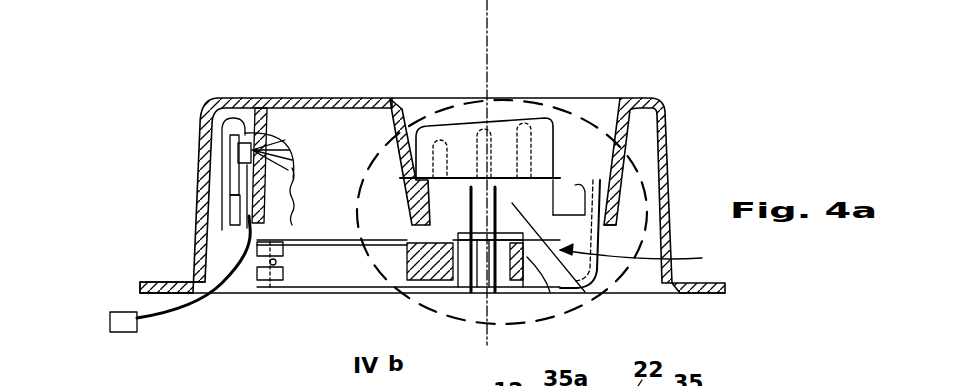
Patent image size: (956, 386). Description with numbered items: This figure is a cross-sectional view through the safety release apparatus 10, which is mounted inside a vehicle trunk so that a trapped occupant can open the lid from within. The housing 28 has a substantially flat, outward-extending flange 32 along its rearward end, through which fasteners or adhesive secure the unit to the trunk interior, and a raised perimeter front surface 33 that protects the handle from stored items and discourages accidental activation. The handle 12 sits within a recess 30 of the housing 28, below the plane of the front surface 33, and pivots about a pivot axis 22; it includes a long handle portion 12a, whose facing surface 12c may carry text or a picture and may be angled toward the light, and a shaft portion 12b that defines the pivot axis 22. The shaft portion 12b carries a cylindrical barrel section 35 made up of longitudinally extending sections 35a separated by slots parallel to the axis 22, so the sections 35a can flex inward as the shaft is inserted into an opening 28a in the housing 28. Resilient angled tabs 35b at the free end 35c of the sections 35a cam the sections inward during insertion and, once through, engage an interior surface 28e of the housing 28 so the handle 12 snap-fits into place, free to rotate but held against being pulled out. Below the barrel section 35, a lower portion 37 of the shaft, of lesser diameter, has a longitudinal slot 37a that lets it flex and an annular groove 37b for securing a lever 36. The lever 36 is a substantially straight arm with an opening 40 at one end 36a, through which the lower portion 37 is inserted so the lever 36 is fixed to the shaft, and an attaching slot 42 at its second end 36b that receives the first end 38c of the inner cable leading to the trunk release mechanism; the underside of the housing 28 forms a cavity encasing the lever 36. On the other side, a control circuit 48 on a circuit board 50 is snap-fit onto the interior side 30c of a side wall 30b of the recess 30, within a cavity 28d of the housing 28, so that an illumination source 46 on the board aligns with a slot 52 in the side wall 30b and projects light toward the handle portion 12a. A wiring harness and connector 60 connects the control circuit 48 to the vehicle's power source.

The safety release apparatus 10 is at (141, 66).
The handle 12 is at (460, 157).
The handle portion 12a is at (503, 133).
The shaft portion 12b is at (655, 252).
The facing surface 12c is at (480, 150).
The pivot axis 22 is at (487, 33).
The housing 28 is at (668, 125).
The opening 28a is at (553, 173).
The cavity 28d is at (228, 268).
The interior surface 28e is at (433, 217).
The recess 30 is at (568, 133).
The side wall 30b is at (293, 187).
The interior side 30c is at (242, 173).
The flange 32 is at (163, 280).
The front surface 33 is at (230, 97).
The barrel section 35 is at (585, 290).
The longitudinally extending sections 35a is at (492, 283).
The tabs 35b is at (600, 217).
The free end 35c is at (433, 238).
The lever 36 is at (349, 270).
The one end 36a is at (547, 263).
The second end 36b is at (295, 270).
The lower portion 37 is at (463, 287).
The slot 37a is at (470, 283).
The annular groove 37b is at (432, 293).
The first end 38c is at (275, 287).
The opening 40 is at (503, 290).
The attaching slot 42 is at (262, 268).
The illumination source 46 is at (245, 105).
The control circuit 48 is at (245, 178).
The circuit board 50 is at (243, 207).
The slot 52 is at (288, 150).
The wiring harness and connector 60 is at (128, 313).